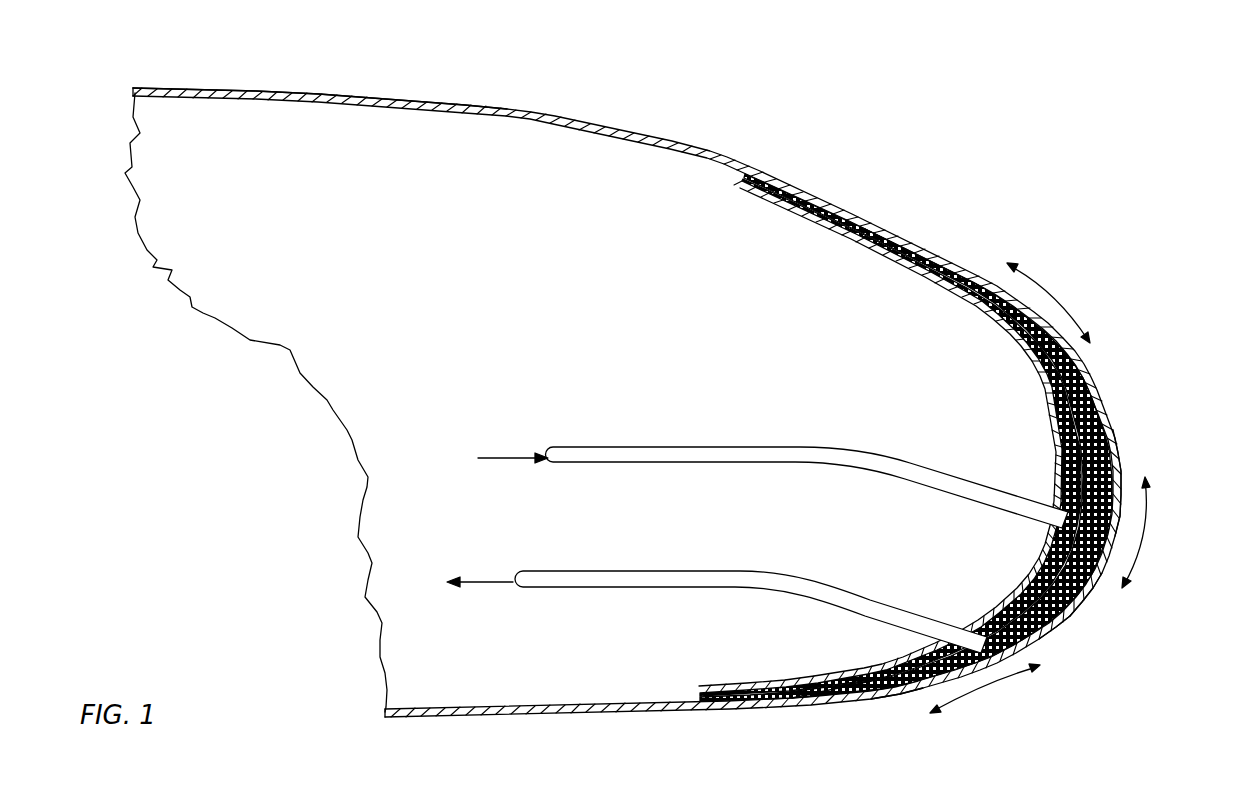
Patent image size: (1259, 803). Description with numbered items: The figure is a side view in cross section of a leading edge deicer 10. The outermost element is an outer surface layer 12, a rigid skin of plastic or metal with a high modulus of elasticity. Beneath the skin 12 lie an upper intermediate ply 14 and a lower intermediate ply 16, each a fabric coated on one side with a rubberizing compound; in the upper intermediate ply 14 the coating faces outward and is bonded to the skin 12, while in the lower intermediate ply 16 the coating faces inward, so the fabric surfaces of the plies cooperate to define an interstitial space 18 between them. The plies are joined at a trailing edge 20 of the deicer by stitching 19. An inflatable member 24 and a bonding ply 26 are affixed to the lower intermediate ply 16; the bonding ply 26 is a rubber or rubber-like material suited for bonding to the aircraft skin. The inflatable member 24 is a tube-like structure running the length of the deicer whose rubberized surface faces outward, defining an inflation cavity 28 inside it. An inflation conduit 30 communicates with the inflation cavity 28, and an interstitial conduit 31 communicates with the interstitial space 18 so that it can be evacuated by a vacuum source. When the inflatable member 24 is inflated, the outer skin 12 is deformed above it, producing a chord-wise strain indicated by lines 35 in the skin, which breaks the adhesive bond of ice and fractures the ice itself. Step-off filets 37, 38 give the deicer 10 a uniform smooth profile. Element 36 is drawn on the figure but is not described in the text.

The leading edge deicer 10 is at (1178, 270).
The outer surface layer 12 is at (883, 215).
The upper intermediate ply 14 is at (920, 690).
The lower intermediate ply 16 is at (1010, 338).
The interstitial space 18 is at (1058, 648).
The stitching 19 is at (997, 283).
The trailing edge 20 is at (783, 170).
The inflatable member 24 is at (1088, 593).
The bonding ply 26 is at (917, 260).
The inflation cavity 28 is at (1113, 470).
The inflation conduit 30 is at (613, 447).
The interstitial conduit 31 is at (630, 573).
The lines 35 is at (1053, 300).
The upper wall 36 is at (467, 113).
The step-off filet 37 is at (1080, 393).
The step-off filet 38 is at (832, 692).